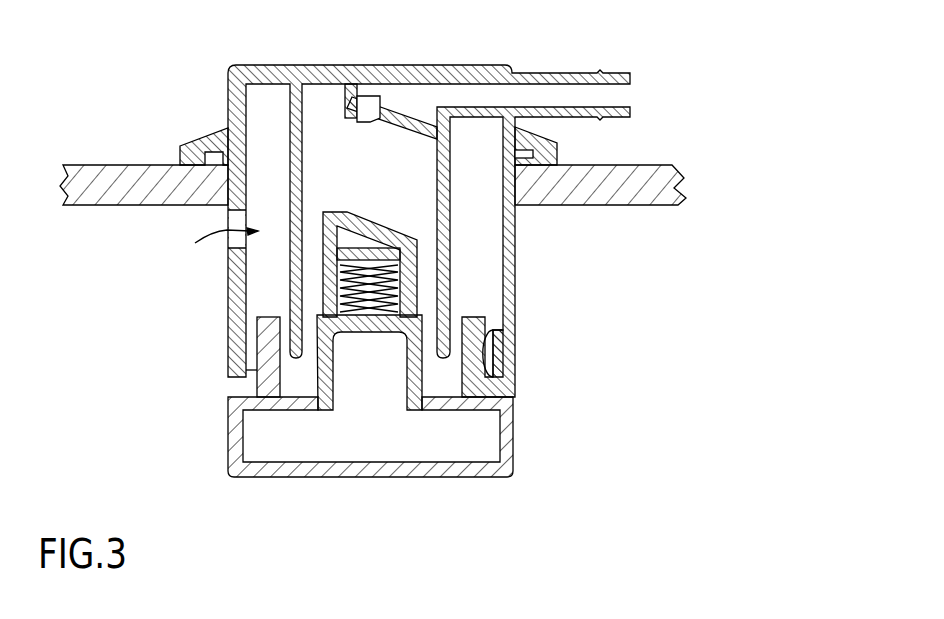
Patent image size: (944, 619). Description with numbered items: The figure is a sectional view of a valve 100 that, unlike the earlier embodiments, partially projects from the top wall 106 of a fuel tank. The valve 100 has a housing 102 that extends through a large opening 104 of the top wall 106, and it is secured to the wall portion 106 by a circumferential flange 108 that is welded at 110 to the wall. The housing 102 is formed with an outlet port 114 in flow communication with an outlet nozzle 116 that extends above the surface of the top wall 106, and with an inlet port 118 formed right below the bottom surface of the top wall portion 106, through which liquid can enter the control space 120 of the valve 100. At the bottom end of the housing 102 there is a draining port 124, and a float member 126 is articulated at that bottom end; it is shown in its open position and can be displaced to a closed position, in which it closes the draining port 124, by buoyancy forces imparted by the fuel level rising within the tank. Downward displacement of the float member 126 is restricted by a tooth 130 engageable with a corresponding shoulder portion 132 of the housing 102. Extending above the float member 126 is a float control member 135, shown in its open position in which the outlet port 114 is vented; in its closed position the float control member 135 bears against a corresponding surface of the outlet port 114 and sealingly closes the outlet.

The valve 100 is at (181, 261).
The housing 102 is at (516, 225).
The large opening 104 is at (227, 208).
The top wall 106 is at (640, 165).
The circumferential flange 108 is at (205, 133).
The weld 110 is at (560, 160).
The outlet port 114 is at (369, 122).
The outlet nozzle 116 is at (560, 90).
The inlet port 118 is at (227, 247).
The control space 120 is at (480, 275).
The draining port 124 is at (247, 380).
The float member 126 is at (513, 432).
The tooth 130 is at (510, 308).
The shoulder portion 132 is at (500, 380).
The float control member 135 is at (450, 252).